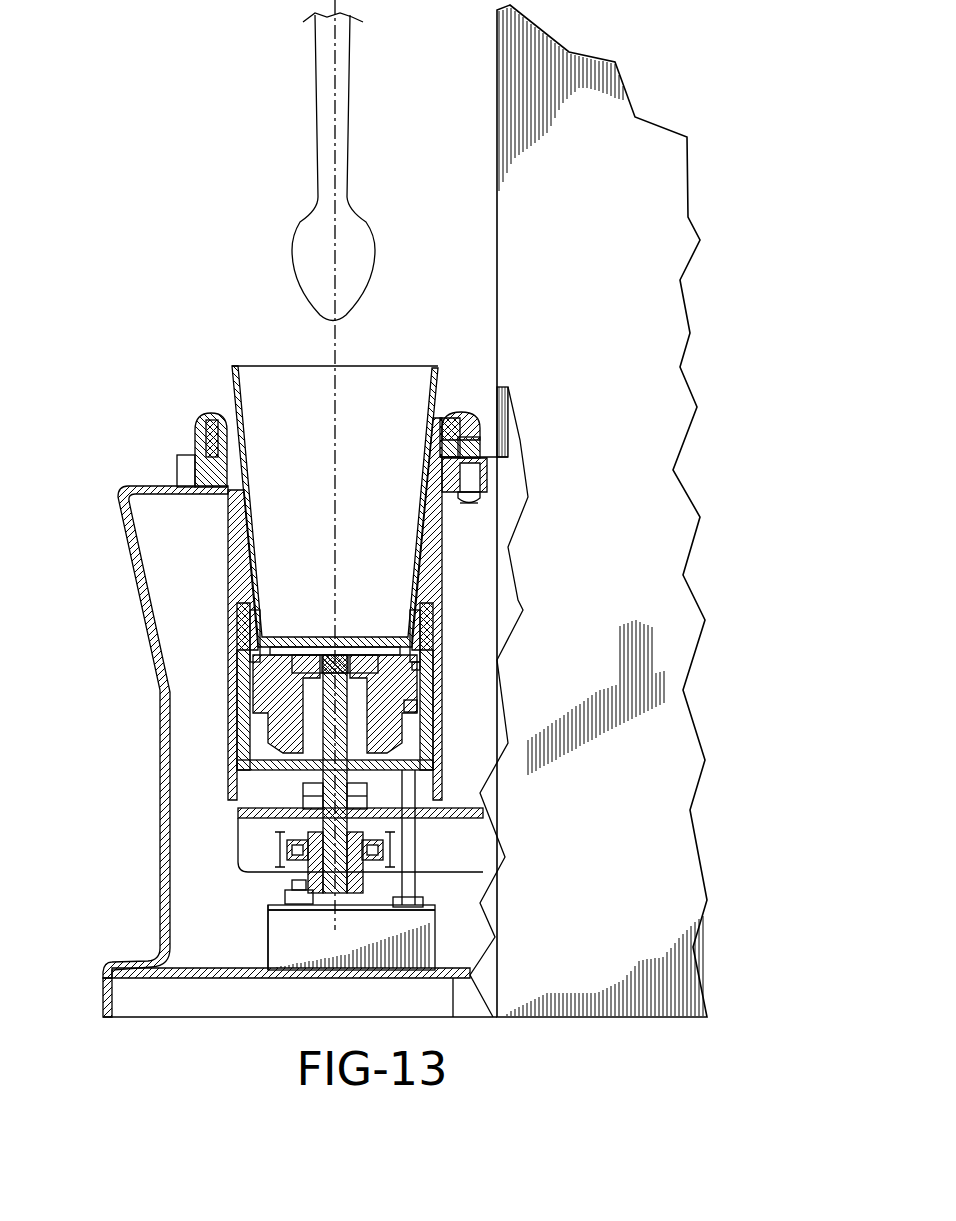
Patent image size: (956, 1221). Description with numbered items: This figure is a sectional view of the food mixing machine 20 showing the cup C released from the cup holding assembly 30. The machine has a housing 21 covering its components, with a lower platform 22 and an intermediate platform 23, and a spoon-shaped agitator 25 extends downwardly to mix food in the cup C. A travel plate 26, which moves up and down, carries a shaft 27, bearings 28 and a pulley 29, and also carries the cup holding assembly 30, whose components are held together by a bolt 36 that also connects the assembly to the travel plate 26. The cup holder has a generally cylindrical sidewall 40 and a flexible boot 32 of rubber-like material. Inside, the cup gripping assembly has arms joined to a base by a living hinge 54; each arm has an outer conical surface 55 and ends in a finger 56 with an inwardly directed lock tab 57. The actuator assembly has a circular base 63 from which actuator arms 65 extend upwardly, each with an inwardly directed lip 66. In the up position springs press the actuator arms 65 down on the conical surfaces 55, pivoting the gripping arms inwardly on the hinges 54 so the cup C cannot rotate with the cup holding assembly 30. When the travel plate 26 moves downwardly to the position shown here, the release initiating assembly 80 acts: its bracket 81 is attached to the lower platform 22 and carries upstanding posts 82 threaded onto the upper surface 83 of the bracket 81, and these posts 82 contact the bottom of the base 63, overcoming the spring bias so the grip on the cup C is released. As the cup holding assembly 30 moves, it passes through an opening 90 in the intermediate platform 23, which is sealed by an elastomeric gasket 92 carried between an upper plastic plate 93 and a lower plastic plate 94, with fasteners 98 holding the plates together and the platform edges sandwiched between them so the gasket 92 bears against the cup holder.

The food mixing machine 20 is at (690, 85).
The housing 21 is at (655, 205).
The lower platform 22 is at (190, 970).
The intermediate platform 23 is at (190, 450).
The agitator 25 is at (325, 145).
The travel plate 26 is at (473, 817).
The shaft 27 is at (328, 857).
The bearings 28 is at (303, 790).
The pulley 29 is at (287, 850).
The cup holding assembly 30 is at (222, 548).
The flexible boot 32 is at (247, 505).
The bolt 36 is at (340, 705).
The sidewall 40 is at (240, 580).
The living hinge 54 is at (385, 757).
The outer conical surface 55 is at (417, 688).
The finger 56 is at (425, 632).
The lock tab 57 is at (423, 600).
The base 63 is at (440, 787).
The actuator arms 65 is at (423, 705).
The lip 66 is at (417, 665).
The release initiating assembly 80 is at (438, 935).
The bracket 81 is at (268, 942).
The posts 82 is at (410, 840).
The upper surface 83 is at (347, 908).
The opening 90 is at (228, 455).
The elastomeric gasket 92 is at (462, 428).
The upper plastic plate 93 is at (485, 440).
The lower plastic plate 94 is at (488, 500).
The fasteners 98 is at (475, 502).
The cup C is at (437, 378).